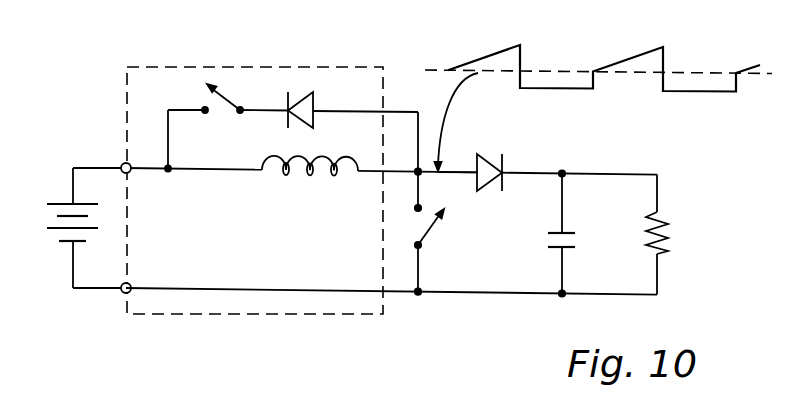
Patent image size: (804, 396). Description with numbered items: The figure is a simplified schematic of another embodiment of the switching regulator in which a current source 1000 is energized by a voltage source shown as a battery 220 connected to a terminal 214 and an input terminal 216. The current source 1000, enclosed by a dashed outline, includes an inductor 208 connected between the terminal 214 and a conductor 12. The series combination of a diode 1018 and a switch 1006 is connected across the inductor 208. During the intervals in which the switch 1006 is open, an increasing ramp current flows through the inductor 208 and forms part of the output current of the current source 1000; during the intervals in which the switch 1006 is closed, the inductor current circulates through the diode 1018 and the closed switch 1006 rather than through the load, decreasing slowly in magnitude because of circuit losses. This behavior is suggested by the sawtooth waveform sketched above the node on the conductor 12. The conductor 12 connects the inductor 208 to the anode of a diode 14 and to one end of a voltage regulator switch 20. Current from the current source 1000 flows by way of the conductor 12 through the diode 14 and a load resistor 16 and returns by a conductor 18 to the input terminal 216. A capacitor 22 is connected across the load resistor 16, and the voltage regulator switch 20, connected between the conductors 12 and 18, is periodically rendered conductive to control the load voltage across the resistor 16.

The current source 1000 is at (237, 66).
The terminal 214 is at (120, 166).
The input terminal 216 is at (121, 292).
The battery 220 is at (48, 215).
The switch 1006 is at (227, 98).
The diode 1018 is at (313, 103).
The inductor 208 is at (310, 173).
The conductor 12 is at (462, 173).
The diode 14 is at (503, 180).
The voltage regulator switch 20 is at (432, 228).
The capacitor 22 is at (572, 240).
The load resistor 16 is at (668, 230).
The conductor 18 is at (510, 296).